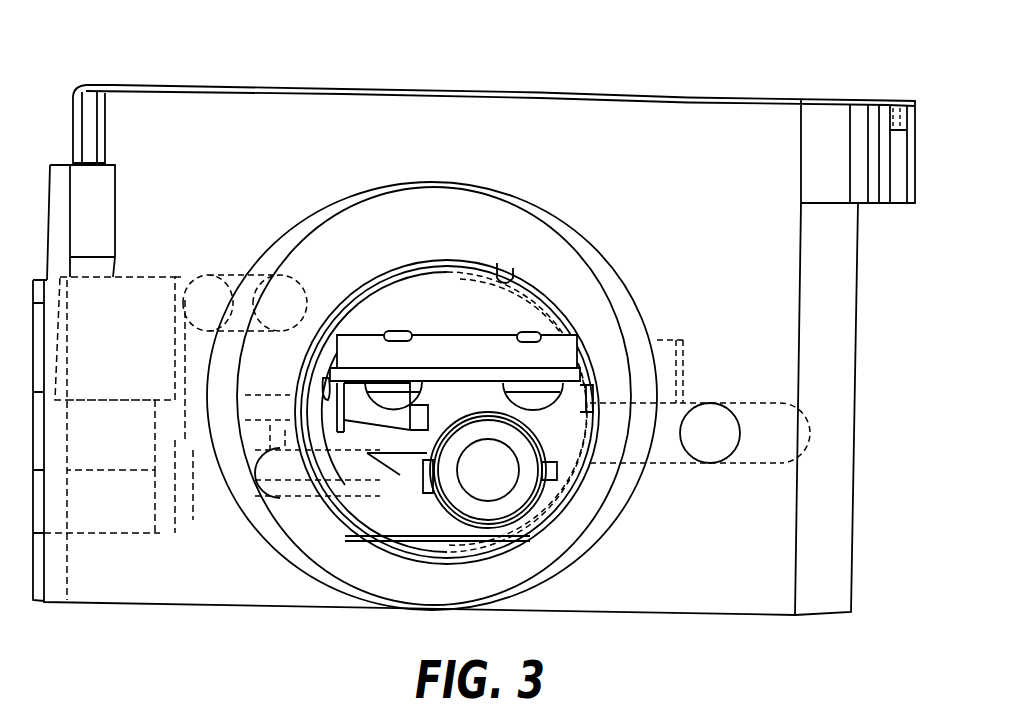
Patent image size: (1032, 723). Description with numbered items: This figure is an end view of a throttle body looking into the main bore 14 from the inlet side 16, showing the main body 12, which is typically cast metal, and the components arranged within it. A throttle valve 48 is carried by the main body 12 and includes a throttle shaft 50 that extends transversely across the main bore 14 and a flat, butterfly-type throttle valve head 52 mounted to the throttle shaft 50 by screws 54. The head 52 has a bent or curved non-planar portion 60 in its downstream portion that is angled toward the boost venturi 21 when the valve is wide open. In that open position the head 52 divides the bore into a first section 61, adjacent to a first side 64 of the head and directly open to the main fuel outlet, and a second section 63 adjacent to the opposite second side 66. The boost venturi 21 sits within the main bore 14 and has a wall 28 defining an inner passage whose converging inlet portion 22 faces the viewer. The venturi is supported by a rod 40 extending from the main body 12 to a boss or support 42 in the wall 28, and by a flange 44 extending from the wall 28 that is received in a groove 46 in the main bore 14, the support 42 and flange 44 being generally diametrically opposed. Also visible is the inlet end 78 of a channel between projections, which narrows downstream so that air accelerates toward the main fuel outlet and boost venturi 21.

The main body 12 is at (718, 72).
The main bore 14 is at (515, 283).
The inlet side 16 is at (443, 540).
The boost venturi 21 is at (515, 525).
The converging inlet portion 22 is at (483, 528).
The wall 28 is at (540, 433).
The rod 40 is at (372, 500).
The support 42 is at (418, 473).
The flange 44 is at (555, 478).
The groove 46 is at (605, 503).
The throttle valve 48 is at (465, 320).
The throttle shaft 50 is at (560, 352).
The throttle valve head 52 is at (482, 352).
The screws 54 is at (392, 333).
The non-planar portion 60 is at (400, 453).
The first section 61 is at (565, 455).
The second section 63 is at (536, 325).
The first side 64 is at (587, 407).
The second side 66 is at (430, 365).
The inlet end 78 is at (342, 406).